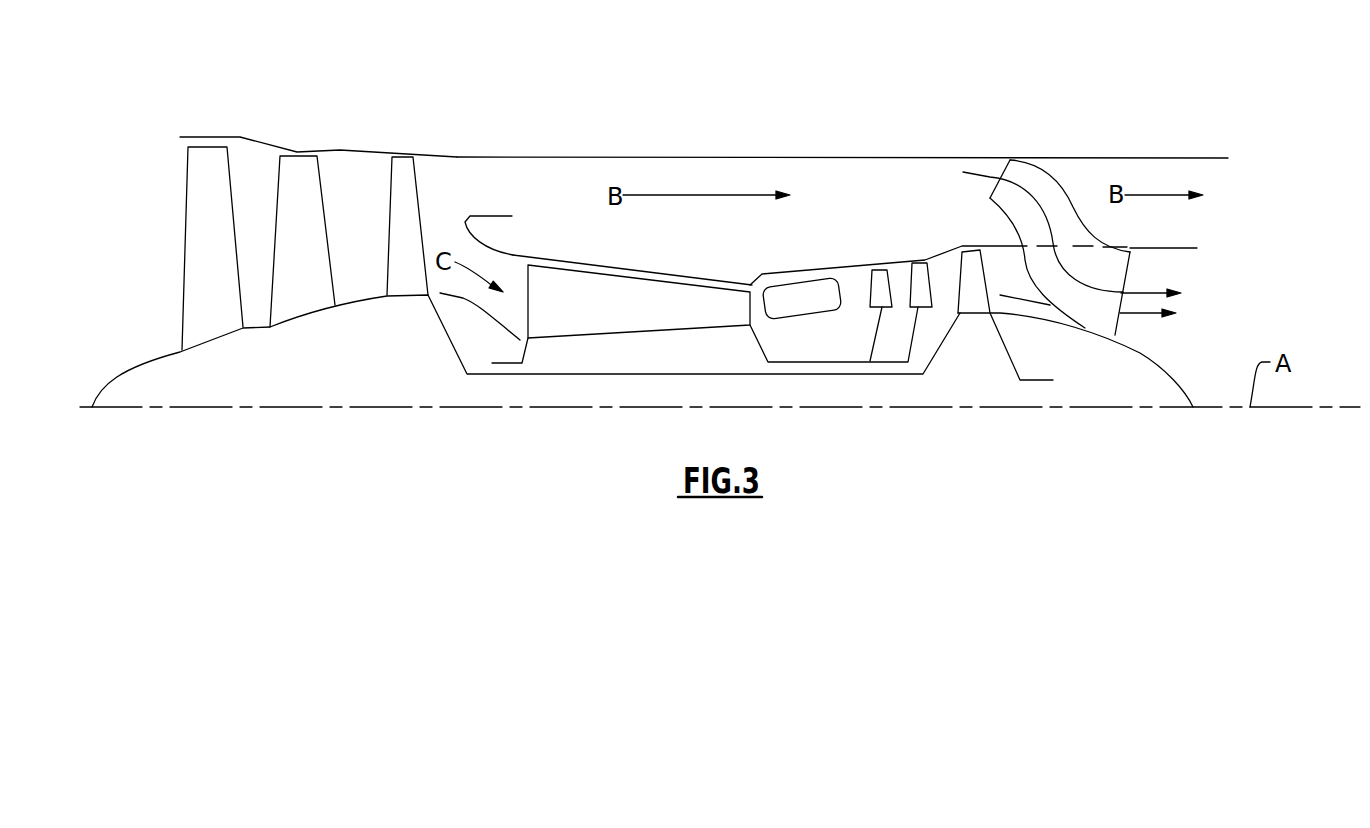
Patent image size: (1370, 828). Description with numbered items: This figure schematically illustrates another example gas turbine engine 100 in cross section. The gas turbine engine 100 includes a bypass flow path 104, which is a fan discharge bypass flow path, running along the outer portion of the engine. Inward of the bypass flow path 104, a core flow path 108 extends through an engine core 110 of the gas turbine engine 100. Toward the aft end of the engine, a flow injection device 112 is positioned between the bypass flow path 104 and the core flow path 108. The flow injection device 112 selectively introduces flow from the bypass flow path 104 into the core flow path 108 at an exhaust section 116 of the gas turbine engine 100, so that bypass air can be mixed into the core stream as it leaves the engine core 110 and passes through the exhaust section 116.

The gas turbine engine 100 is at (720, 224).
The bypass flow path 104 is at (842, 165).
The core flow path 108 is at (973, 293).
The engine core 110 is at (632, 273).
The flow injection device 112 is at (1073, 193).
The exhaust section 116 is at (1155, 323).